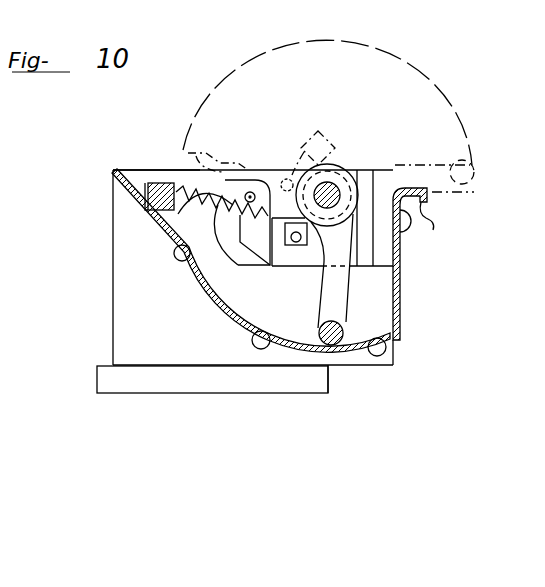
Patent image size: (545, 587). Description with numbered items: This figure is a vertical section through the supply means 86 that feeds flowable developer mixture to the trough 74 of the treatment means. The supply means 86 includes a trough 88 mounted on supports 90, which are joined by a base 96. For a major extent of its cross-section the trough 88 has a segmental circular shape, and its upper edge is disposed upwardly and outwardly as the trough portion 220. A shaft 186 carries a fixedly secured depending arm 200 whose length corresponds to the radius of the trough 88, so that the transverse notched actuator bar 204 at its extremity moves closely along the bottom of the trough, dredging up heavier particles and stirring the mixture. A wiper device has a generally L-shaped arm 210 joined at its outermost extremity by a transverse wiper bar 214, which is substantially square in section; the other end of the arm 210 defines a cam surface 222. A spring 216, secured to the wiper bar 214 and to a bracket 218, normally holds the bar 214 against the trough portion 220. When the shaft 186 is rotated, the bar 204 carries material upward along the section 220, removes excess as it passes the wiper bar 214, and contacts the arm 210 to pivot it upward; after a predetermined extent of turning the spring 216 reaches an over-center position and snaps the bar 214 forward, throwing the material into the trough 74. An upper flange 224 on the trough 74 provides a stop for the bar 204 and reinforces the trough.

The supply means 86 is at (164, 170).
The cam surfaces 222 is at (220, 152).
The wiper device arm 210 is at (273, 170).
The wiper bar 214 is at (326, 137).
The shaft 186 is at (330, 192).
The upwardly and outwardly extending trough portion 220 is at (134, 188).
The spring 216 is at (237, 222).
The bracket 218 is at (295, 250).
The depending arm 200 is at (342, 283).
The actuator bar 204 is at (345, 327).
The trough 74 is at (402, 326).
The upper flange 224 is at (433, 231).
The supports 90 is at (195, 326).
The base 96 is at (183, 383).
The trough 88 is at (295, 351).